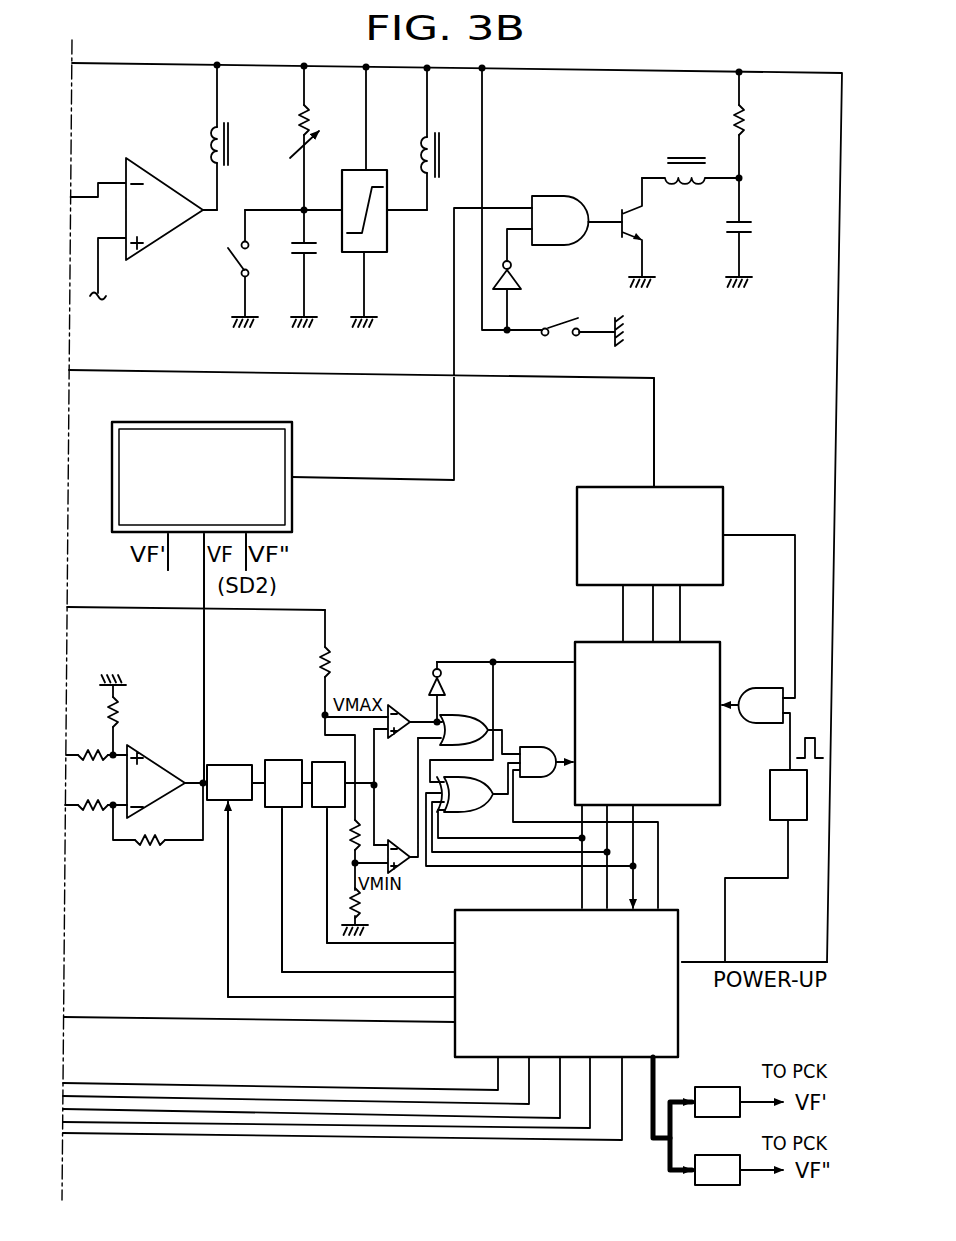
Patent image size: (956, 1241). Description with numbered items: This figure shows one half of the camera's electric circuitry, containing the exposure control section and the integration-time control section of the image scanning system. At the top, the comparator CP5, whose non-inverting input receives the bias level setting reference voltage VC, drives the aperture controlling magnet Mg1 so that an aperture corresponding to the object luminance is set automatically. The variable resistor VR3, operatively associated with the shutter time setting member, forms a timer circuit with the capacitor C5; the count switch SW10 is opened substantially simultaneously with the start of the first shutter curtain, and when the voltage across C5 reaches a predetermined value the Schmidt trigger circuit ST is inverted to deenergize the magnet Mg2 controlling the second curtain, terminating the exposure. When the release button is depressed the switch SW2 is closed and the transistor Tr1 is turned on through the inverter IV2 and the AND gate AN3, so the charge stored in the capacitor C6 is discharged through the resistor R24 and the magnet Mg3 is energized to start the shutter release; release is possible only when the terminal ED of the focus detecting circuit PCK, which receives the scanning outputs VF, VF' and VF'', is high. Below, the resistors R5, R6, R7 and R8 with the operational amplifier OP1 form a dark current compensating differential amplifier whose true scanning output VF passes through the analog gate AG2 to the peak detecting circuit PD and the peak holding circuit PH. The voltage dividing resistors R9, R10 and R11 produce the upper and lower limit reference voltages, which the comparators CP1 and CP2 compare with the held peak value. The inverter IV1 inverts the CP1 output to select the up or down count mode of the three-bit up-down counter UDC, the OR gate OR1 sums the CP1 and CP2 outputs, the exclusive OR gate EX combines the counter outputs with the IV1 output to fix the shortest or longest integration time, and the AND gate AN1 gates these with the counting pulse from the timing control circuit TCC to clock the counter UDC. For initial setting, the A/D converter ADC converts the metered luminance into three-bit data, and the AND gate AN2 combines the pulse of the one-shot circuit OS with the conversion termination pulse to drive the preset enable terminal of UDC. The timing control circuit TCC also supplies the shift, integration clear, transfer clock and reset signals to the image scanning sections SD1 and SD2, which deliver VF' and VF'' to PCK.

The comparator CP5 is at (144, 225).
The bias level setting reference voltage VC is at (99, 312).
The aperture controlling magnet Mg1 is at (210, 137).
The variable resistor VR3 is at (295, 140).
The count switch SW10 is at (231, 256).
The capacitor C5 is at (291, 250).
The Schmidt trigger circuit ST is at (387, 237).
The magnet Mg2 is at (423, 150).
The AND gate AN3 is at (577, 220).
The inverter IV2 is at (523, 272).
The switch SW2 is at (546, 339).
The transistor Tr1 is at (633, 220).
The magnet Mg3 is at (656, 164).
The resistor R24 is at (746, 122).
The capacitor C6 is at (752, 228).
The focus detecting circuit PCK is at (223, 489).
The voltage dividing resistor R9 is at (319, 665).
The voltage dividing resistor R10 is at (362, 830).
The voltage dividing resistor R11 is at (360, 903).
The resistor R5 is at (89, 746).
The resistor R6 is at (121, 718).
The resistor R7 is at (88, 815).
The resistor R8 is at (150, 848).
The operational amplifier OP1 is at (167, 781).
The analog gate AG2 is at (236, 782).
The peak detecting circuit PD is at (297, 798).
The peak holding circuit PH is at (342, 798).
The comparator CP1 is at (399, 703).
The inverter IV1 is at (445, 688).
The OR gate OR1 is at (469, 734).
The AND gate AN1 is at (585, 827).
The exclusive OR gate EX is at (478, 787).
The comparator CP2 is at (406, 866).
The A/D converter ADC is at (673, 546).
The up-down counter UDC is at (667, 743).
The AND gate AN2 is at (752, 705).
The one-shot circuit OS is at (788, 795).
The timing control circuit TCC is at (593, 996).
The image scanning section SD1 is at (739, 1102).
The image scanning section SD2 is at (739, 1170).